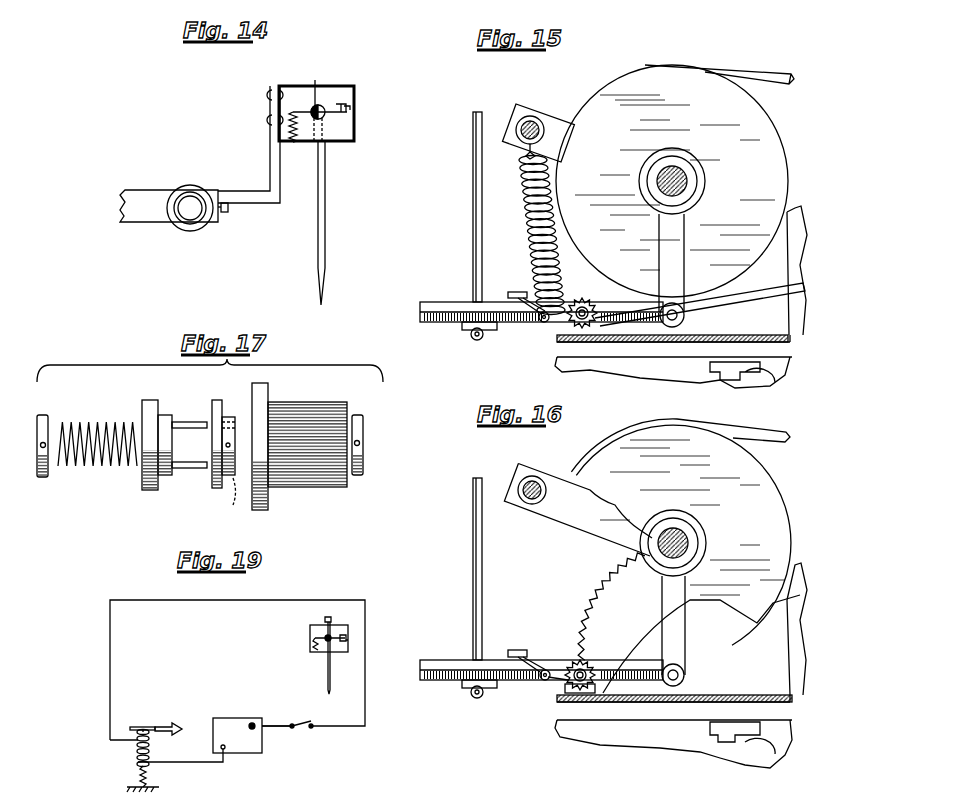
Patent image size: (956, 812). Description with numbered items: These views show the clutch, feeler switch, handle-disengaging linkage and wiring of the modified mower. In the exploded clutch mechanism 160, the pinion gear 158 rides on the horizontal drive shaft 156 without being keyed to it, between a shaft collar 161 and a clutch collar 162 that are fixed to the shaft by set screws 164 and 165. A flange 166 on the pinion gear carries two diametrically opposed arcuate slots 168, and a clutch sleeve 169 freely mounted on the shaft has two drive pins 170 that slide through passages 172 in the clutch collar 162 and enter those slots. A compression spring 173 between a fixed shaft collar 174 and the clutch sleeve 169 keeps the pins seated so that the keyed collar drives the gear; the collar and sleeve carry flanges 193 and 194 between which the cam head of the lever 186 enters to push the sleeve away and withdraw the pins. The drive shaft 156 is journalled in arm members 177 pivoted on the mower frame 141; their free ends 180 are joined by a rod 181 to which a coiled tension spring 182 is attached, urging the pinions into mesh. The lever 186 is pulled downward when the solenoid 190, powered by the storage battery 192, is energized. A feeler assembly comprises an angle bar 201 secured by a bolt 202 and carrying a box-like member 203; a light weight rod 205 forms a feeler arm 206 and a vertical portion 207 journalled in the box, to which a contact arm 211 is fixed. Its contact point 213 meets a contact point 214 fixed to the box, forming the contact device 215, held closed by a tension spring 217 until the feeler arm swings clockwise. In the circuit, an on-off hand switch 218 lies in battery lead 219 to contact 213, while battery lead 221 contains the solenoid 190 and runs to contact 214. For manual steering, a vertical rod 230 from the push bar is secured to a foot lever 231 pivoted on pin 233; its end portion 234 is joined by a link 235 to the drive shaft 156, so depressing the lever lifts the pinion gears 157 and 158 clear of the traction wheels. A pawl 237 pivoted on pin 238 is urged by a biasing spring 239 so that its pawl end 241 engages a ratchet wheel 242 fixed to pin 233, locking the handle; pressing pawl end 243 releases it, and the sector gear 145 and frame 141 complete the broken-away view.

In FIG. 15, the mower frame 141 is at (773, 345).
In FIG. 16, the mower frame 141 is at (776, 722).
In FIG. 16, the sector gear 145 is at (630, 584).
In FIG. 15, the horizontal drive shaft 156 is at (682, 177).
In FIG. 16, the horizontal drive shaft 156 is at (686, 540).
In FIG. 16, the pinion gear 157 is at (640, 561).
In FIG. 17, the pinion gear 158 is at (326, 410).
In FIG. 17, the clutch mechanism 160 is at (121, 480).
In FIG. 17, the shaft collar 161 is at (362, 429).
In FIG. 17, the clutch collar 162 is at (224, 416).
In FIG. 17, the set screw 164 is at (360, 443).
In FIG. 17, the set screw 165 is at (215, 468).
In FIG. 17, the flange 166 is at (268, 499).
In FIG. 17, the arcuate slots 168 is at (258, 425).
In FIG. 17, the clutch sleeve 169 is at (160, 415).
In FIG. 17, the drive pins 170 is at (184, 462).
In FIG. 17, the passages 172 is at (233, 500).
In FIG. 17, the compression spring 173 is at (82, 424).
In FIG. 17, the fixed shaft collar 174 is at (44, 418).
In FIG. 15, the arm members 177 is at (788, 244).
In FIG. 16, the arm members 177 is at (566, 508).
In FIG. 15, the free ends 180 is at (526, 116).
In FIG. 16, the free ends 180 is at (526, 476).
In FIG. 15, the rod 181 is at (558, 118).
In FIG. 16, the rod 181 is at (546, 485).
In FIG. 15, the coiled tension spring 182 is at (534, 224).
In FIG. 19, the lever 186 is at (155, 728).
In FIG. 19, the solenoid 190 is at (135, 751).
In FIG. 19, the storage battery 192 is at (232, 722).
In FIG. 17, the flange 193 is at (217, 489).
In FIG. 17, the annular flange 194 is at (148, 491).
In FIG. 14, the angle bar 201 is at (266, 196).
In FIG. 14, the bolt 202 is at (228, 213).
In FIG. 14, the box-like member 203 is at (350, 84).
In FIG. 14, the light weight rod 205 is at (329, 180).
In FIG. 14, the feeler arm 206 is at (327, 244).
In FIG. 14, the vertical portion 207 is at (317, 104).
In FIG. 14, the contact arm 211 is at (307, 122).
In FIG. 14, the contact point 213 is at (356, 117).
In FIG. 19, the contact point 213 is at (345, 641).
In FIG. 14, the contact point 214 is at (346, 106).
In FIG. 19, the contact point 214 is at (333, 636).
In FIG. 14, the contact device 215 is at (357, 112).
In FIG. 19, the contact device 215 is at (356, 638).
In FIG. 14, the tension spring 217 is at (288, 133).
In FIG. 19, the on-off hand switch 218 is at (308, 730).
In FIG. 19, the battery lead 219 is at (277, 725).
In FIG. 19, the battery lead 221 is at (110, 642).
In FIG. 15, the vertical rod 230 is at (473, 196).
In FIG. 16, the vertical rod 230 is at (475, 548).
In FIG. 15, the foot pedal or lever 231 is at (432, 306).
In FIG. 16, the foot pedal or lever 231 is at (432, 661).
In FIG. 15, the pin 233 is at (590, 322).
In FIG. 16, the pin 233 is at (580, 682).
In FIG. 16, the end portion 234 is at (657, 682).
In FIG. 16, the link 235 is at (686, 648).
In FIG. 15, the pawl 237 is at (540, 320).
In FIG. 16, the pawl 237 is at (520, 680).
In FIG. 16, the pin 238 is at (549, 682).
In FIG. 16, the biasing spring 239 is at (541, 681).
In FIG. 16, the pawl end 241 is at (547, 670).
In FIG. 16, the ratchet wheel 242 is at (582, 660).
In FIG. 16, the pawl end 243 is at (513, 650).